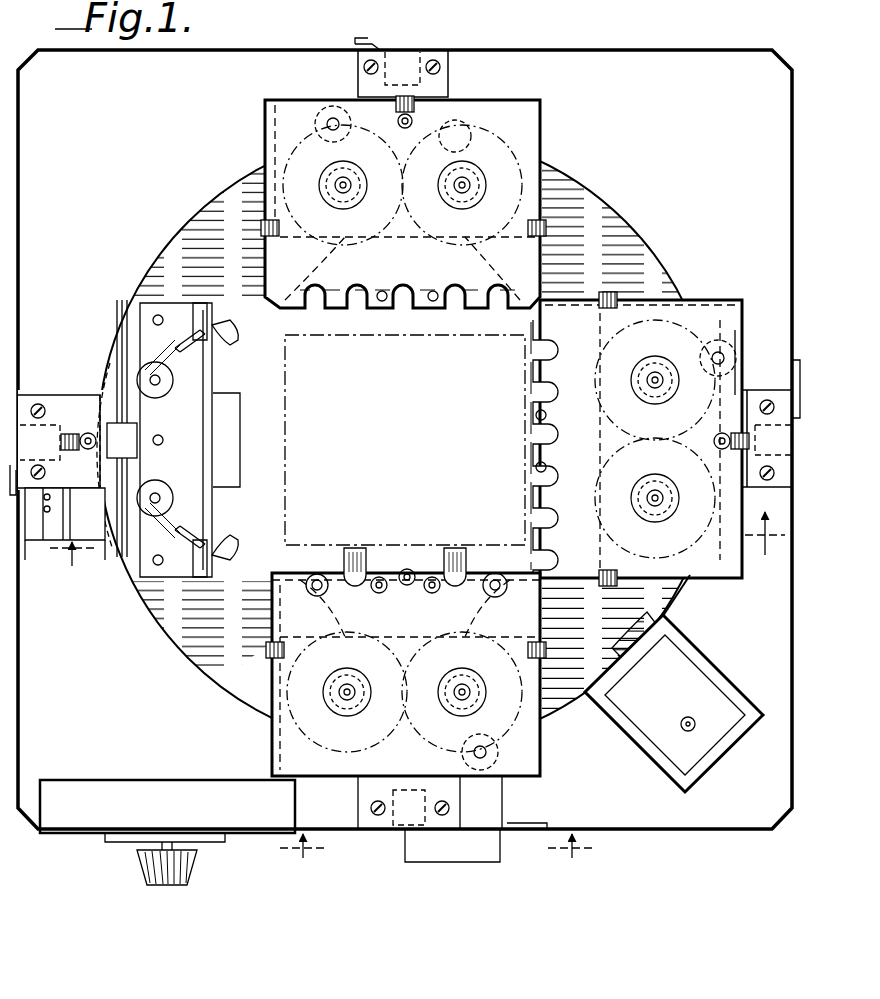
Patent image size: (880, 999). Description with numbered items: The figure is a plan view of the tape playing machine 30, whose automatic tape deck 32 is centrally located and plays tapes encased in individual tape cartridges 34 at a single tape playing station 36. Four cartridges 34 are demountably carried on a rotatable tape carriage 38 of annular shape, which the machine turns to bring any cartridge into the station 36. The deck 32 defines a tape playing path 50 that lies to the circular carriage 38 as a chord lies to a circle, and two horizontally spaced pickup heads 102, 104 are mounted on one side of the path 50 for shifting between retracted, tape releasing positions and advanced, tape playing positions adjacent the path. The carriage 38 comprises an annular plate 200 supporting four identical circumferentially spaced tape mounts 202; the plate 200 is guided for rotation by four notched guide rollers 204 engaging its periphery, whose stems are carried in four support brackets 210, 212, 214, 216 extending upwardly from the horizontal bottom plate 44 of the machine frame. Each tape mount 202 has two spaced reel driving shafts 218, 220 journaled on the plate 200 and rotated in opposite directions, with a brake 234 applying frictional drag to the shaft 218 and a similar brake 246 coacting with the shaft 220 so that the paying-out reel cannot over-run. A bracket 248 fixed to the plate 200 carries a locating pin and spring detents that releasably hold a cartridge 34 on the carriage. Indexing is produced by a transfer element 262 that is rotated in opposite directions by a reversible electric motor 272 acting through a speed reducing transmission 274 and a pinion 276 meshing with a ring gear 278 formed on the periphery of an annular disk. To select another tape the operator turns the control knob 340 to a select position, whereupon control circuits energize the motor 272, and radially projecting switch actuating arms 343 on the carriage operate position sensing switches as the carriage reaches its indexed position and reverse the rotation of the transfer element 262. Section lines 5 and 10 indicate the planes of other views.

The section line 5- 5 is at (417, 549).
The section line 10- 10 is at (310, 890).
The tape playing machine 30 is at (145, 892).
The automatic tape deck 32 is at (543, 300).
The tape cartridge 34 is at (280, 142).
The tape playing station 36 is at (258, 586).
The rotatable tape carriage 38 is at (178, 652).
The bottom plate 44 is at (632, 55).
The tape playing path 50 is at (402, 560).
The pickup head 102 is at (357, 548).
The pickup head 104 is at (460, 548).
The annular plate 200 is at (160, 636).
The tape mount 202 is at (555, 146).
The notched guide roller 204 is at (322, 108).
The support bracket 210 is at (65, 548).
The support bracket 212 is at (442, 96).
The support bracket 214 is at (738, 352).
The support bracket 216 is at (372, 790).
The reel driving shaft 218 is at (171, 371).
The reel driving shaft 220 is at (171, 500).
The brake 234 is at (205, 388).
The brake 246 is at (192, 490).
The bracket 248 is at (80, 400).
The transfer element 262 is at (672, 612).
The reversible electric motor 272 is at (700, 760).
The speed reducing transmission 274 is at (765, 672).
The pinion 276 is at (635, 698).
The ring gear 278 is at (652, 642).
The control knob 340 is at (175, 888).
The switch actuating arm 343 is at (375, 42).